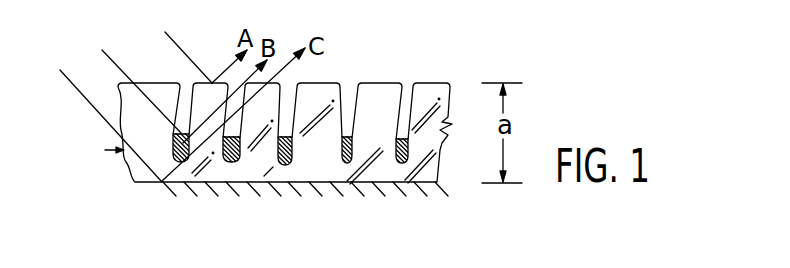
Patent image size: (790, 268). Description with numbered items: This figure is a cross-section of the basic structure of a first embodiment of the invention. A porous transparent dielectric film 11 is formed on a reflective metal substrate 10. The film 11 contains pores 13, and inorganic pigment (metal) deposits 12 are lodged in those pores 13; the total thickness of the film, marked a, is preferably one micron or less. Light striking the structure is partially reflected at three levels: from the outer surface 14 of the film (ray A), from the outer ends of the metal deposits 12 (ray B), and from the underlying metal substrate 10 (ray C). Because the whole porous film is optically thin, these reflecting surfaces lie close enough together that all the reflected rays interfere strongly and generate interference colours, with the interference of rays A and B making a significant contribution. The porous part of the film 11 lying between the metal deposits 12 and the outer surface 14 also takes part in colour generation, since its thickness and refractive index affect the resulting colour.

The reflective metal substrate 10 is at (258, 187).
The porous transparent dielectric film 11 is at (437, 138).
The inorganic pigment (metal) deposits 12 is at (397, 140).
The pores 13 is at (350, 90).
The outer surface 14 is at (428, 83).